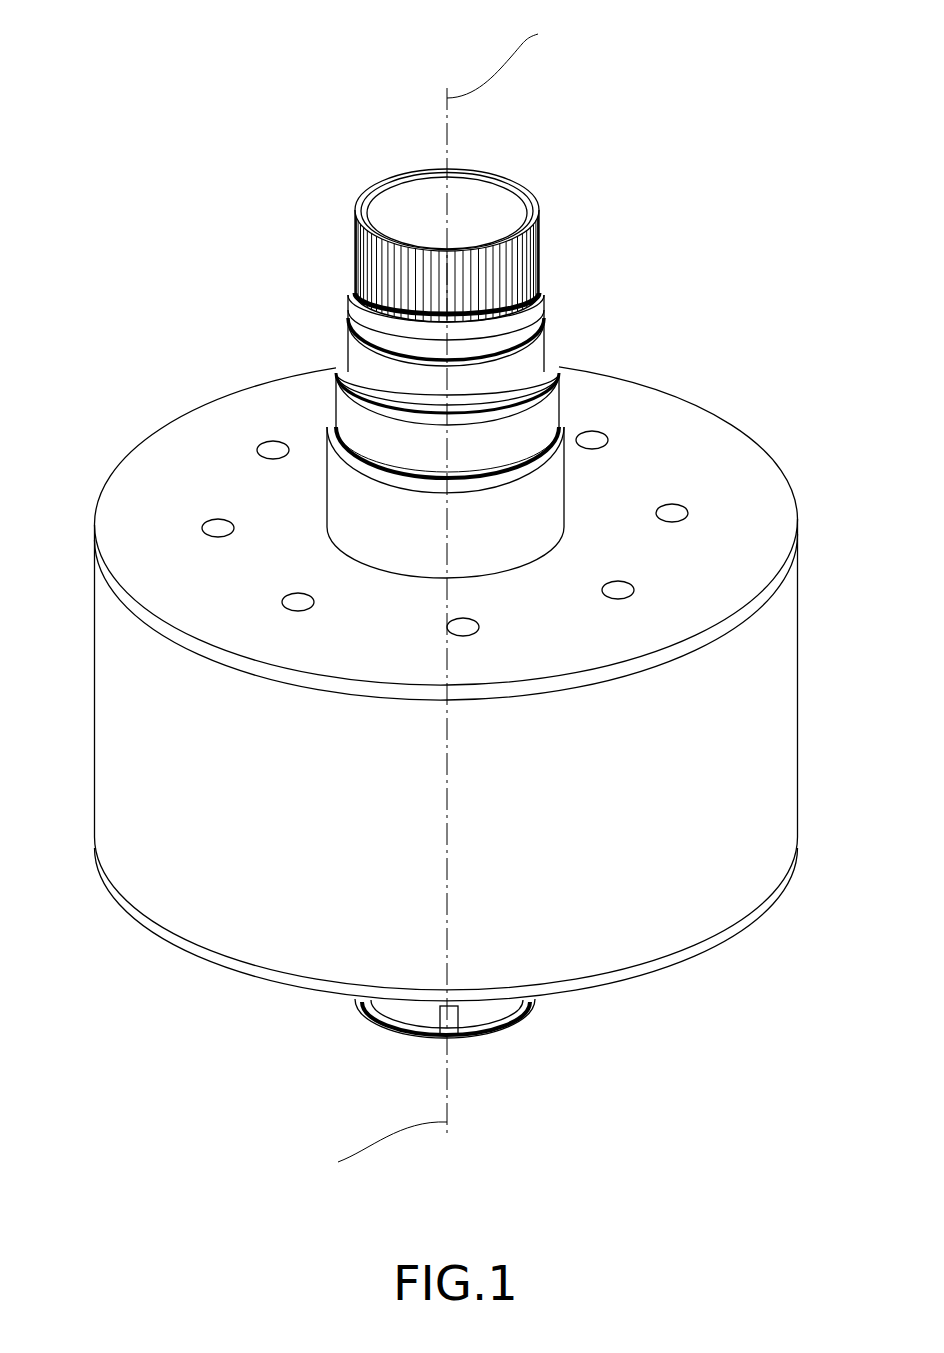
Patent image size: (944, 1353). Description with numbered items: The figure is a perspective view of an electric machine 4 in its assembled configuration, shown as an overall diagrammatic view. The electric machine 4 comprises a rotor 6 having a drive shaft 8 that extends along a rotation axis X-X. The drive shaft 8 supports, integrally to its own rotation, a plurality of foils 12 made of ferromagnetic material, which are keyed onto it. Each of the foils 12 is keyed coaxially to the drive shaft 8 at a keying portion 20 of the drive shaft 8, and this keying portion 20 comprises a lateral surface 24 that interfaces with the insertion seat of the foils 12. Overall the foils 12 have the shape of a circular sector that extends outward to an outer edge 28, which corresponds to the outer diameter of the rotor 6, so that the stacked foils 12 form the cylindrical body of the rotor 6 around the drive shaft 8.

The electric machine 4 is at (741, 100).
The rotor 6 is at (797, 612).
The foils 12 is at (445, 533).
The outer edge 28 is at (92, 805).
The keying portion 20 is at (353, 495).
The lateral surface 24 is at (447, 245).
The drive shaft 8 is at (533, 510).